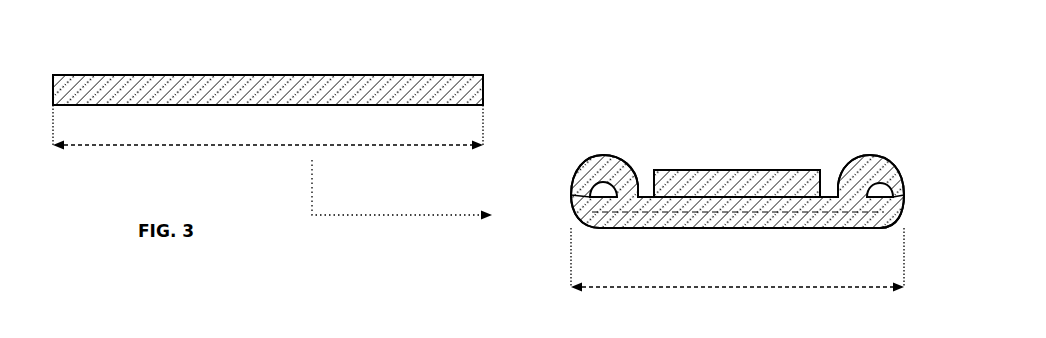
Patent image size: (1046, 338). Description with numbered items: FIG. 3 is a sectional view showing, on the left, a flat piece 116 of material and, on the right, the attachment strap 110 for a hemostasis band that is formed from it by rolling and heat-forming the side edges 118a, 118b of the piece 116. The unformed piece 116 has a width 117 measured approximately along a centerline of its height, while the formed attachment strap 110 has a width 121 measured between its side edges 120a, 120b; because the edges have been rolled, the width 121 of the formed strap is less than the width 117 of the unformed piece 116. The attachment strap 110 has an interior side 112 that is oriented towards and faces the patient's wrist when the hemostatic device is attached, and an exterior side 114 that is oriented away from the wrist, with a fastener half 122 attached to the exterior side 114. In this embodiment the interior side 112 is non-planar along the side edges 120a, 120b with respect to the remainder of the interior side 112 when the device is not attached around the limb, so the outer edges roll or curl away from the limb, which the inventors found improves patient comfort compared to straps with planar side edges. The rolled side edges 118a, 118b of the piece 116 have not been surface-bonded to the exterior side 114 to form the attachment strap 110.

The attachment strap 110 is at (615, 92).
The interior side 112 is at (785, 240).
The exterior side 114 is at (828, 184).
The piece of material 116 is at (233, 90).
The width of the piece 117 is at (247, 148).
The side edge of the piece 118a is at (53, 88).
The side edge of the piece 118b is at (484, 90).
The side edge of the attachment strap 120a is at (559, 191).
The side edge of the attachment strap 120b is at (917, 191).
The width of the attachment strap 121 is at (733, 290).
The fastener half 122 is at (733, 183).